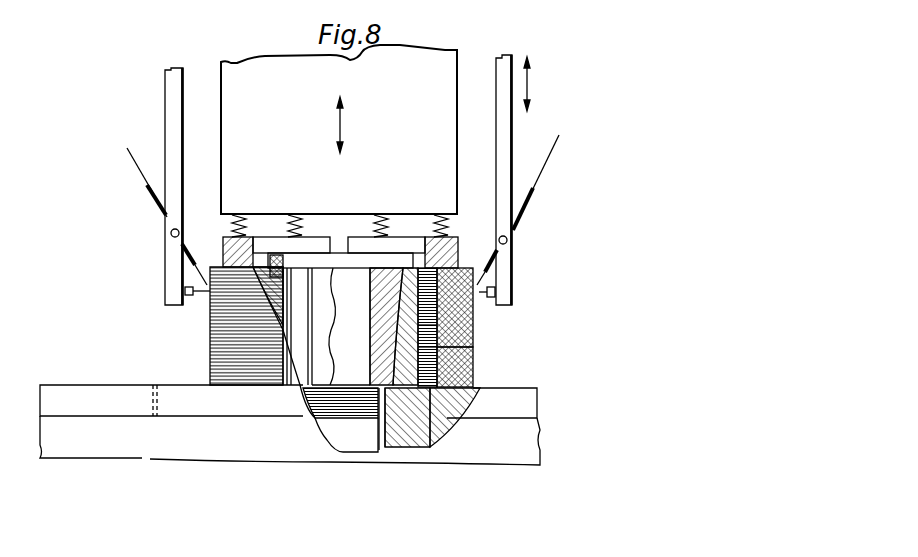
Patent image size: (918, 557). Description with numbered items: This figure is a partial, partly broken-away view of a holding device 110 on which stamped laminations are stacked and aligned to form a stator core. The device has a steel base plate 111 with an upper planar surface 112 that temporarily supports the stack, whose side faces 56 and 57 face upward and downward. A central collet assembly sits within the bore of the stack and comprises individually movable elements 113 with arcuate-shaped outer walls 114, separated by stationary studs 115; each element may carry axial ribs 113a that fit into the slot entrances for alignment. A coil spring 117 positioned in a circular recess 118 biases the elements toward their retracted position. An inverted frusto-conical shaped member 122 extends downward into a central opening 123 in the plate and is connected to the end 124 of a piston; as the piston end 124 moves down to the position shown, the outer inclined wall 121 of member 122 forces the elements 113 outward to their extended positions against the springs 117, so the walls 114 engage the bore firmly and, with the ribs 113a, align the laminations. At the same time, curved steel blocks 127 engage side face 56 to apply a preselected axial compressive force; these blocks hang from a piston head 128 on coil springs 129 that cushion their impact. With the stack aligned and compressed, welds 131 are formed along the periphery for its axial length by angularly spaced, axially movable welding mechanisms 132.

The side face 56 is at (248, 236).
The side face 57 is at (240, 388).
The holding device 110 is at (547, 440).
The steel base plate 111 is at (525, 402).
The upper planar surface 112 is at (455, 378).
The individually movable elements 113 is at (437, 346).
The axial ribs 113a is at (437, 327).
The arcuate-shaped outer walls 114 is at (333, 270).
The stationary studs 115 is at (280, 312).
The coil spring 117 is at (433, 393).
The circular recess 118 is at (393, 393).
The outer inclined wall 121 is at (402, 294).
The inverted frusto-conical shaped member 122 is at (367, 333).
The central opening 123 is at (381, 405).
The piston end 124 is at (355, 438).
The curved steel blocks 127 is at (270, 250).
The piston head 128 is at (418, 62).
The coil springs 129 is at (300, 216).
The weld 131 is at (208, 272).
The welding mechanisms 132 is at (507, 142).